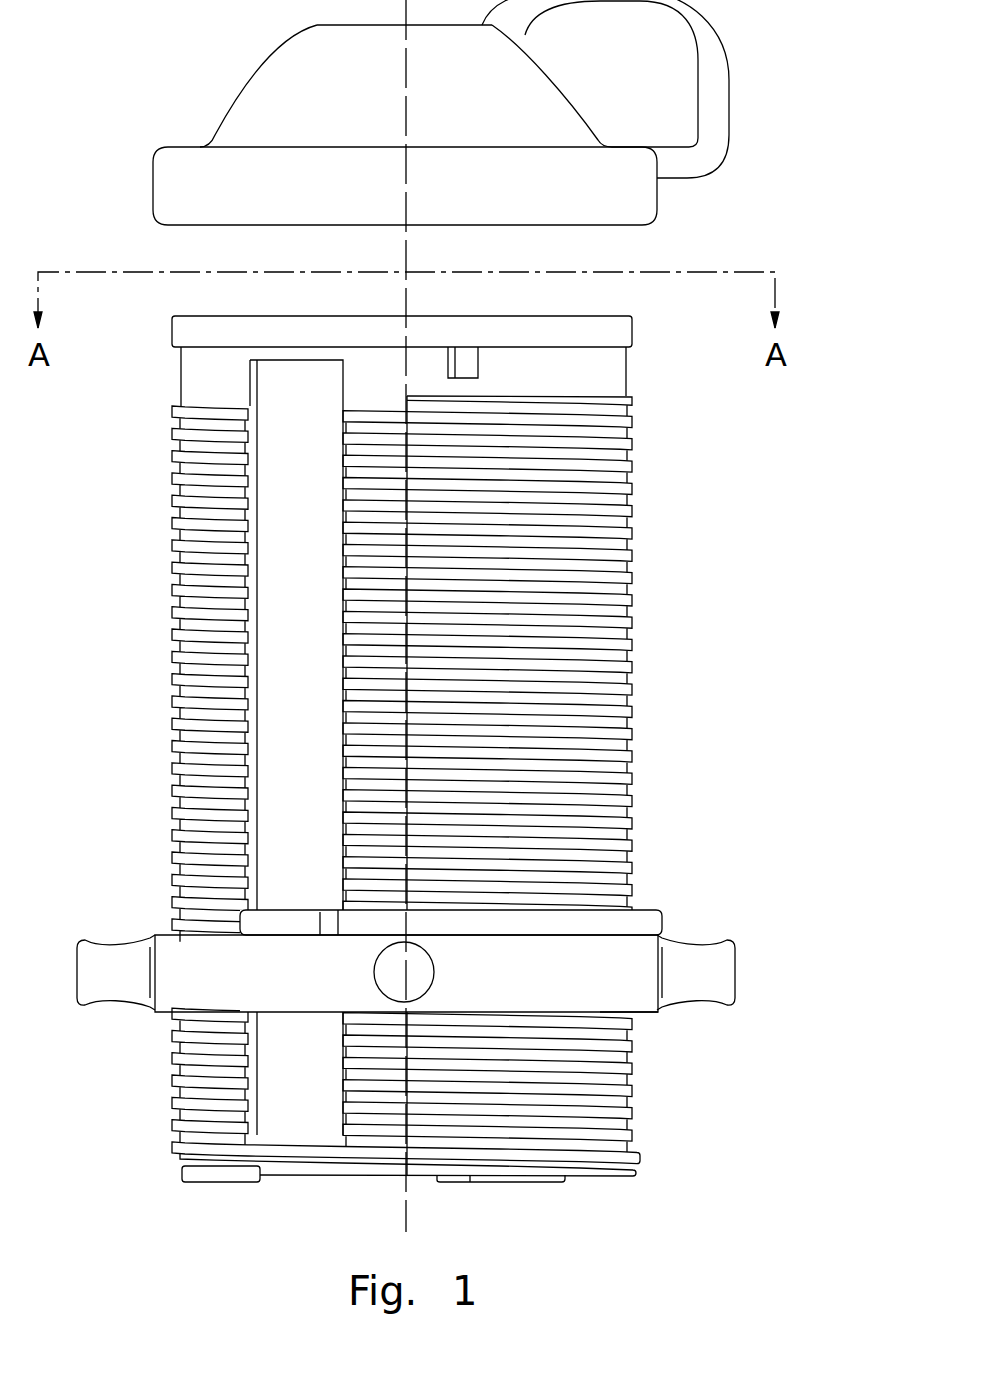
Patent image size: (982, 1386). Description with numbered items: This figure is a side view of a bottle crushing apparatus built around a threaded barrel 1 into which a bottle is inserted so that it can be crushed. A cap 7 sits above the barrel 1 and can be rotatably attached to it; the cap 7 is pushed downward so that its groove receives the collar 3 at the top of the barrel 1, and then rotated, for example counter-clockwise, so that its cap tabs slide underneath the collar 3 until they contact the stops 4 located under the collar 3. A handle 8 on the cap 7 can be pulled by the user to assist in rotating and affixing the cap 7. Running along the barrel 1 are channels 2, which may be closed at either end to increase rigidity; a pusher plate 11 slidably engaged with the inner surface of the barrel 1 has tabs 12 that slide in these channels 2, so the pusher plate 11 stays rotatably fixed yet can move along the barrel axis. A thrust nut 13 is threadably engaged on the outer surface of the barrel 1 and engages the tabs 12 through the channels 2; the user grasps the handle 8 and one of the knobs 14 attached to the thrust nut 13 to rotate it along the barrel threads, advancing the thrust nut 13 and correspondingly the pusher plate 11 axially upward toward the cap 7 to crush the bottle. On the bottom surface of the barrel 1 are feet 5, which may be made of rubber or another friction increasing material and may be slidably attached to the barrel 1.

The barrel 1 is at (690, 535).
The channels 2 is at (258, 541).
The collar 3 is at (585, 316).
The stops 4 is at (480, 364).
The feet 5 is at (222, 1182).
The cap 7 is at (214, 76).
The handle 8 is at (723, 50).
The pusher plate 11 is at (313, 880).
The tabs 12 is at (647, 907).
The thrust nut 13 is at (660, 1028).
The knobs 14 is at (737, 968).